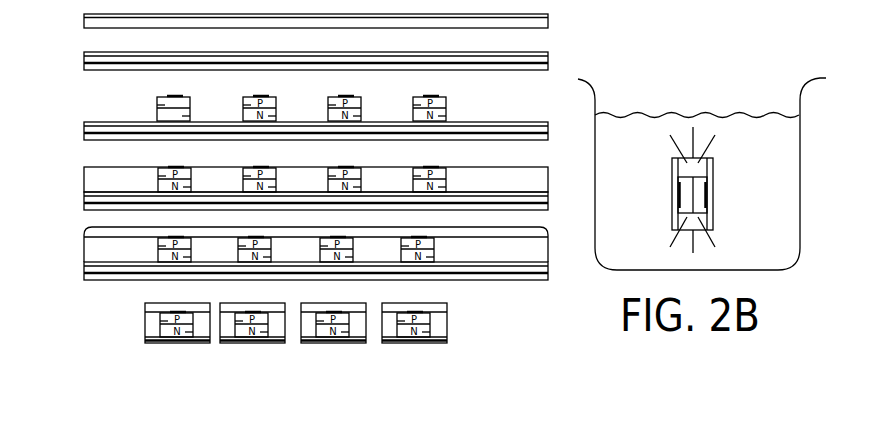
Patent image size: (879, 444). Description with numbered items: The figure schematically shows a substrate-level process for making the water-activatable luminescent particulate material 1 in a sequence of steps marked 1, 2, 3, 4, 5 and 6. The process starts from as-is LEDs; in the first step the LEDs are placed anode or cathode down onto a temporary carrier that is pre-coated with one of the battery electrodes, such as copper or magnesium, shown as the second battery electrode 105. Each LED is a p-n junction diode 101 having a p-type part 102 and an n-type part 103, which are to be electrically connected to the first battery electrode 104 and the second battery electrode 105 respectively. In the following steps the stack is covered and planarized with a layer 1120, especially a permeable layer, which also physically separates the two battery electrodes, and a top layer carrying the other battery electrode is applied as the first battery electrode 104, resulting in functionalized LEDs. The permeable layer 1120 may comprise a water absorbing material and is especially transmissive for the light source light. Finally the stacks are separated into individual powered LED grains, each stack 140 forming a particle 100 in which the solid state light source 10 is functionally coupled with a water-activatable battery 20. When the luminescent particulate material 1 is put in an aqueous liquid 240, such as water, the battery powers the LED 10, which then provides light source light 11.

The water-activatable luminescent particulate material 1 is at (299, 386).
The second step 2 is at (328, 202).
The third step 3 is at (305, 110).
The fourth step 4 is at (305, 189).
The fifth step 5 is at (328, 258).
The sixth step 6 is at (431, 218).
The solid state light source 10 is at (590, 218).
The light source light 11 is at (702, 147).
The water-activatable battery 20 is at (459, 13).
The particle 100 is at (421, 350).
The p-n junction diode 101 is at (468, 117).
The p-type part 102 is at (159, 105).
The n-type part 103 is at (188, 116).
The first battery electrode 104 is at (578, 220).
The second battery electrode 105 is at (523, 52).
The stack 140 is at (136, 365).
The aqueous liquid 240 is at (617, 252).
The permeable layer 1120 is at (130, 173).